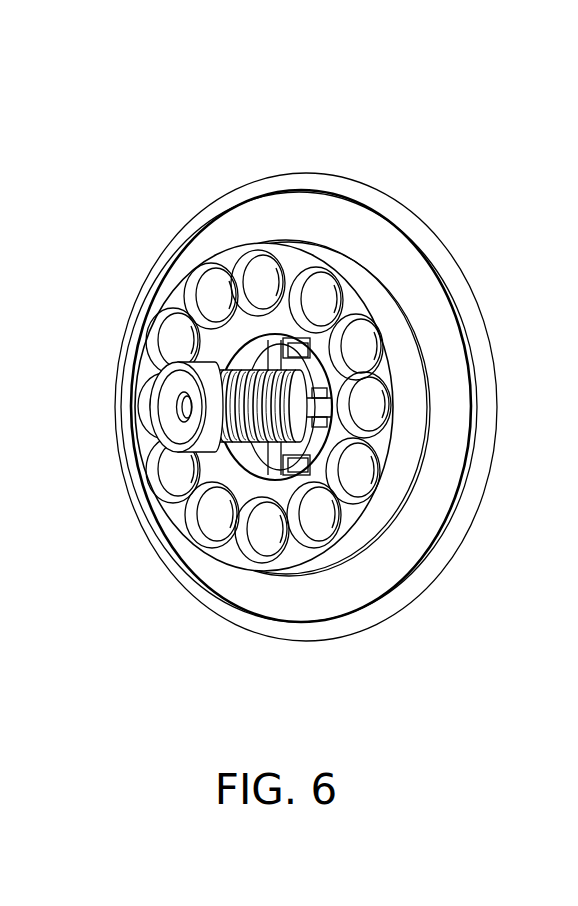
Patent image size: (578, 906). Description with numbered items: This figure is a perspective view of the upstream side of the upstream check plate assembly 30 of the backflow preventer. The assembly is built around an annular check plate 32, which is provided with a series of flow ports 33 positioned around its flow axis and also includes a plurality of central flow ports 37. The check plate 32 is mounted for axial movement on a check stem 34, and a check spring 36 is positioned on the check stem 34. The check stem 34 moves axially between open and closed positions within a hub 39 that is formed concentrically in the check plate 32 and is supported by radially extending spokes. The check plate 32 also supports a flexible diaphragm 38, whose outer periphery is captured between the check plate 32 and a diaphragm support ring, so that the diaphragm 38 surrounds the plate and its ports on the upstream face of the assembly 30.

The upstream check plate assembly 30 is at (118, 75).
The annular check plate 32 is at (233, 257).
The flow ports 33 is at (163, 325).
The check stem 34 is at (180, 410).
The check spring 36 is at (248, 462).
The central flow ports 37 is at (352, 400).
The flexible diaphragm 38 is at (428, 238).
The hub 39 is at (278, 347).